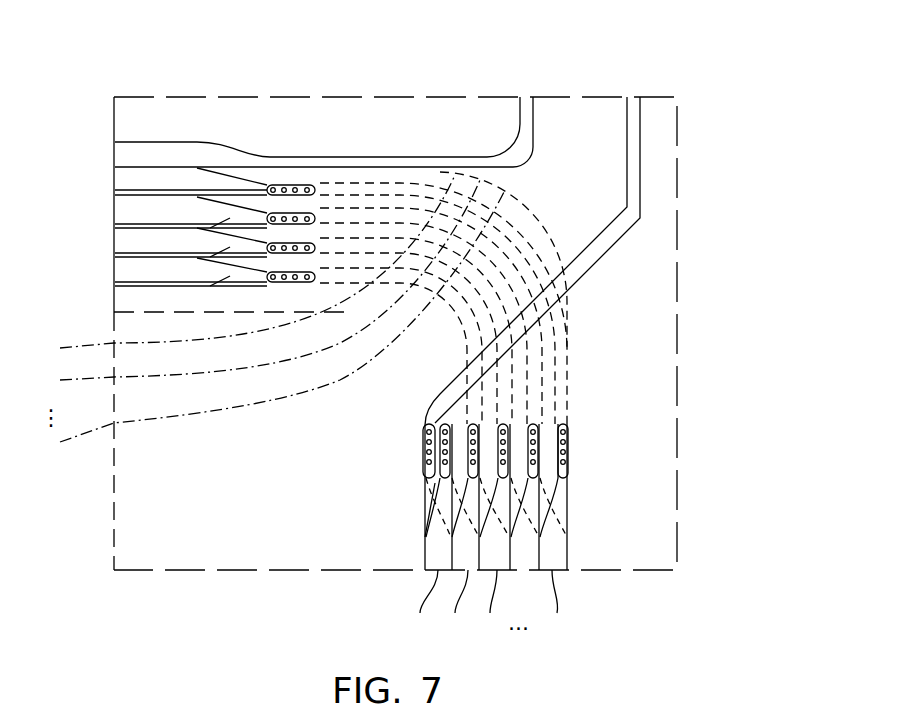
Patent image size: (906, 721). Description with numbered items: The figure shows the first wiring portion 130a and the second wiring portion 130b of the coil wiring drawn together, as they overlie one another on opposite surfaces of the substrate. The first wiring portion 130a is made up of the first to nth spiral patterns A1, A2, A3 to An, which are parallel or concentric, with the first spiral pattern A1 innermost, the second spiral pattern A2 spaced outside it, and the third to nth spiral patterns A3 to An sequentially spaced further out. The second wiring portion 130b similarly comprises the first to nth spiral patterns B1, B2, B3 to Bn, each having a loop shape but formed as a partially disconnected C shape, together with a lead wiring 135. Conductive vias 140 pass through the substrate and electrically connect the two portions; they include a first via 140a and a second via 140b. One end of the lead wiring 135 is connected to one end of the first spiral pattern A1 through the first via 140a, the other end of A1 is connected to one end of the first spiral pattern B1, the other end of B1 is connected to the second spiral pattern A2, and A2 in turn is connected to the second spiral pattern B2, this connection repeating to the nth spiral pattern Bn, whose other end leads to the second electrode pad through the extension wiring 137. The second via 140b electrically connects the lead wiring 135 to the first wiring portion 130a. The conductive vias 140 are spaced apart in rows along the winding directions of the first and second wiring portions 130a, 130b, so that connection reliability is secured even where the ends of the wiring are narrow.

The extension wiring 137 is at (398, 157).
The lead wiring 135 is at (637, 157).
The first wiring portion 130a is at (567, 333).
The second wiring portion 130b is at (565, 546).
The conductive via 140 is at (510, 445).
The first via 140a is at (423, 472).
The second via 140b is at (423, 445).
The first spiral pattern B1 is at (114, 273).
The second spiral pattern B2 is at (114, 243).
The third spiral pattern B3 is at (114, 213).
The nth spiral pattern Bn is at (114, 155).
The first spiral pattern A1 is at (114, 300).
The second spiral pattern A2 is at (242, 270).
The third spiral pattern A3 is at (255, 288).
The nth spiral pattern An is at (267, 324).